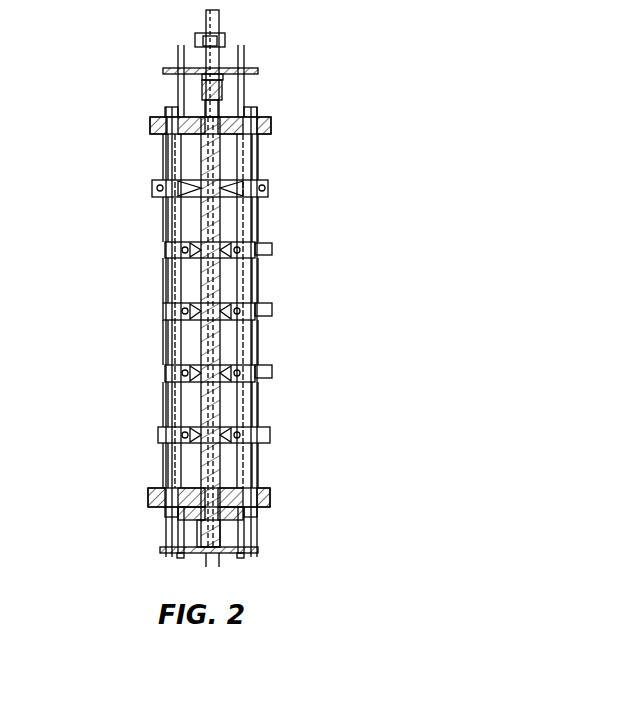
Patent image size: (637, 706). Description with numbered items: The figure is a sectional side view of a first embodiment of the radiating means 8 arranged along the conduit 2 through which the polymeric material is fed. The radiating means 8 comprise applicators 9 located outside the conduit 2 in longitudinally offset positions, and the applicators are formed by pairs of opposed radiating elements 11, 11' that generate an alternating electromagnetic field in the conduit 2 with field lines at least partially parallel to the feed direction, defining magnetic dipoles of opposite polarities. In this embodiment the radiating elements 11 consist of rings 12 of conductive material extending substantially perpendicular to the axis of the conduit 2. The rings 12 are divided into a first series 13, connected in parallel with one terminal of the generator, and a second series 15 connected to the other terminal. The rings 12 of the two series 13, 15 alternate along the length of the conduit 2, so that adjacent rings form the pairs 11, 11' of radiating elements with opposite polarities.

The conduit 2 is at (202, 106).
The radiating means 8 is at (292, 113).
The applicators 9 is at (130, 497).
The radiating element 11 is at (211, 311).
The radiating element 11' is at (287, 373).
The rings 12 is at (165, 247).
The first series of rings 13 is at (141, 184).
The second series of rings 15 is at (262, 252).